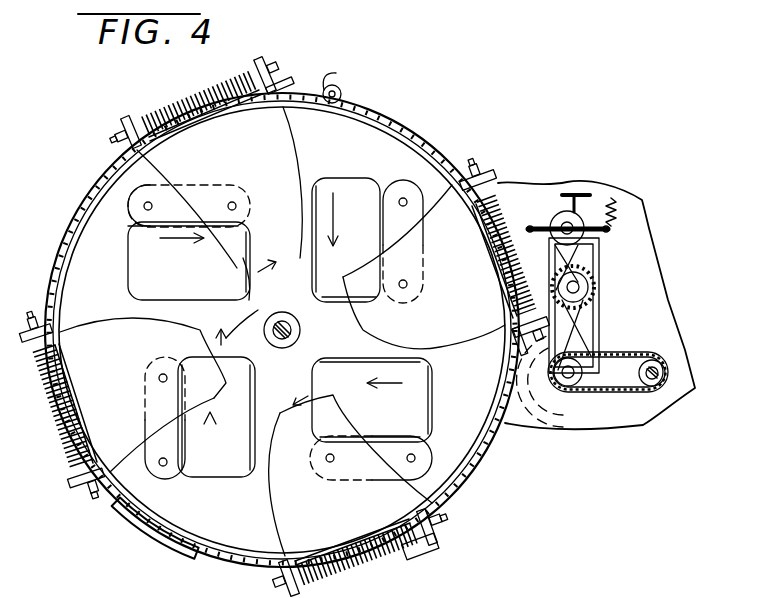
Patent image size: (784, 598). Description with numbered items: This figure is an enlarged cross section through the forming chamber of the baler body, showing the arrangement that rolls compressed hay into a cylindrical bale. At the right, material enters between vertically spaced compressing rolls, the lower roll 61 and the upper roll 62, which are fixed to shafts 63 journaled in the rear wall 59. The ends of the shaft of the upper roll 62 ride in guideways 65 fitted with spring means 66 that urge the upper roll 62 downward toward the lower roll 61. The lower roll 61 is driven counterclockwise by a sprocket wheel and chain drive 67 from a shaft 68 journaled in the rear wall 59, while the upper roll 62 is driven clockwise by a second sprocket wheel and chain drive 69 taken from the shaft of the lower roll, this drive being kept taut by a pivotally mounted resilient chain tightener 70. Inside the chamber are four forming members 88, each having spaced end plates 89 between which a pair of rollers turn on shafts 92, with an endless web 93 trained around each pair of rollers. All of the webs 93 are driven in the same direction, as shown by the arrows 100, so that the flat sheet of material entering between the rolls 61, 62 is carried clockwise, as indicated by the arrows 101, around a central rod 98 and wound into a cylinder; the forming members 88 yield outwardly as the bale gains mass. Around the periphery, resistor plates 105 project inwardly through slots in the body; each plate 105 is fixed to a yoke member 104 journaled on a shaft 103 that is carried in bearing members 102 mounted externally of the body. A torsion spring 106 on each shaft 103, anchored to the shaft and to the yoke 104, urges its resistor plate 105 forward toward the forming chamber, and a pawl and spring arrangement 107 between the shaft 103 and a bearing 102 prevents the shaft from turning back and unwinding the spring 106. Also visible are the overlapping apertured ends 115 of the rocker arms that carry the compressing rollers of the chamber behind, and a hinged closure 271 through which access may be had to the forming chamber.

The bearing member 102 is at (267, 56).
The hinged closure 271 is at (342, 84).
The forming member 88 is at (351, 180).
The end plate 89 is at (420, 457).
The arrows 100 is at (333, 203).
The resistor plate 105 is at (252, 162).
The shaft 103 is at (46, 325).
The endless web 93 is at (247, 286).
The arrows 101 is at (259, 313).
The rod 98 is at (300, 334).
The shaft 92 is at (163, 458).
The torsion spring 106 is at (63, 446).
The pawl and spring arrangement 107 is at (90, 500).
The yoke member 104 is at (438, 510).
The rocker arm ends 115 is at (330, 594).
The chain tightener 70 is at (570, 228).
The spring means 66 is at (590, 241).
The upper compressing roll 62 is at (592, 278).
The guideways 65 is at (602, 291).
The shaft 63 is at (580, 288).
The wall 59 is at (645, 332).
The shaft 68 is at (660, 376).
The sprocket wheel and chain drive 69 is at (544, 394).
The lower compressing roll 61 is at (553, 418).
The sprocket wheel and chain drive 67 is at (647, 393).